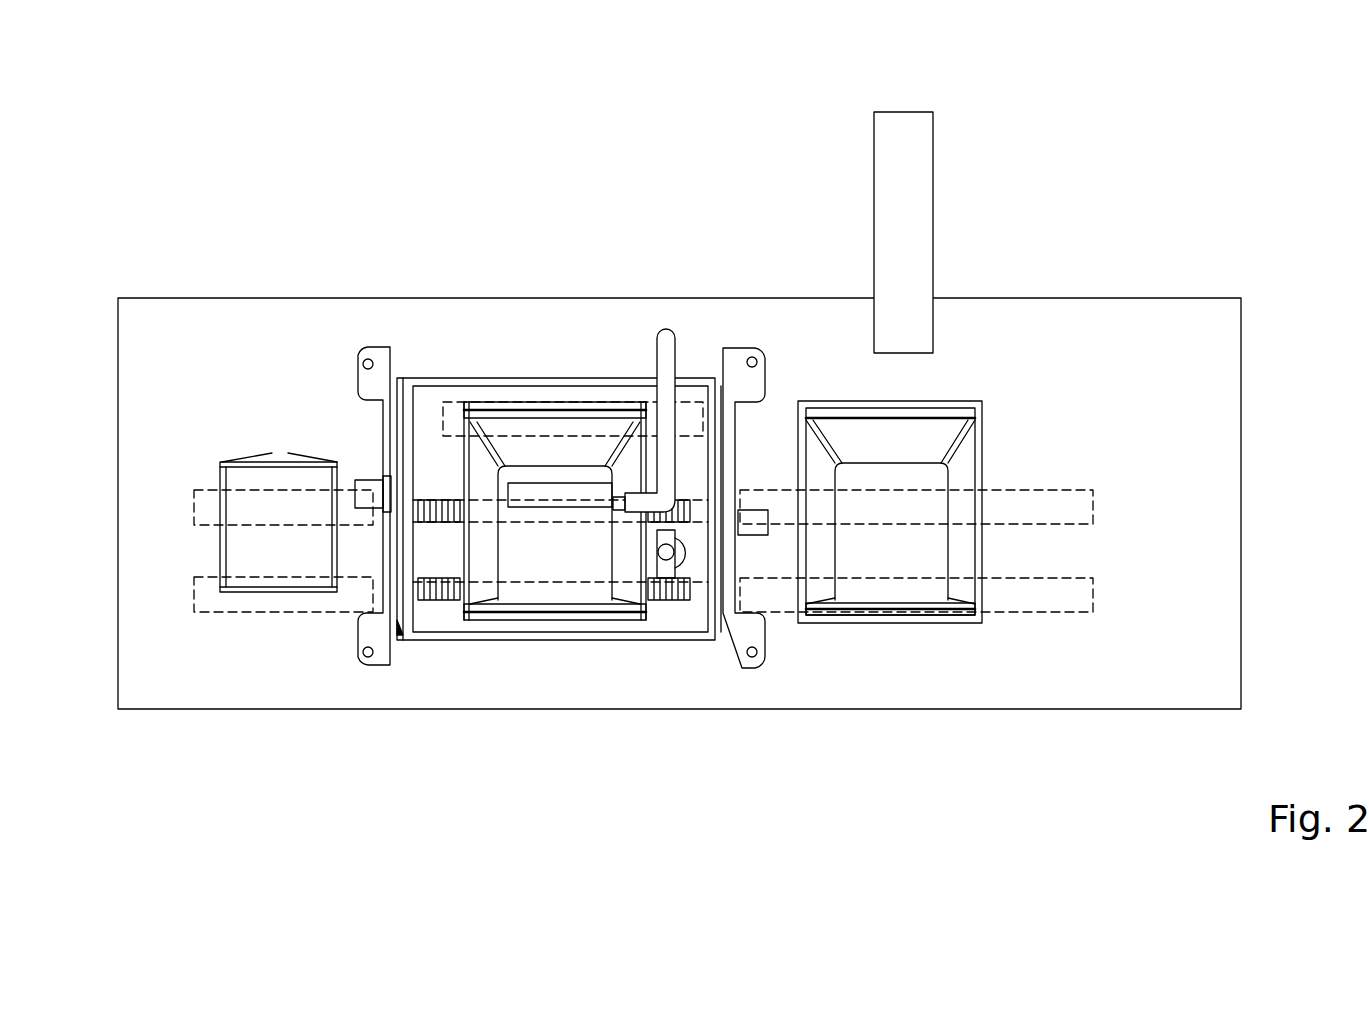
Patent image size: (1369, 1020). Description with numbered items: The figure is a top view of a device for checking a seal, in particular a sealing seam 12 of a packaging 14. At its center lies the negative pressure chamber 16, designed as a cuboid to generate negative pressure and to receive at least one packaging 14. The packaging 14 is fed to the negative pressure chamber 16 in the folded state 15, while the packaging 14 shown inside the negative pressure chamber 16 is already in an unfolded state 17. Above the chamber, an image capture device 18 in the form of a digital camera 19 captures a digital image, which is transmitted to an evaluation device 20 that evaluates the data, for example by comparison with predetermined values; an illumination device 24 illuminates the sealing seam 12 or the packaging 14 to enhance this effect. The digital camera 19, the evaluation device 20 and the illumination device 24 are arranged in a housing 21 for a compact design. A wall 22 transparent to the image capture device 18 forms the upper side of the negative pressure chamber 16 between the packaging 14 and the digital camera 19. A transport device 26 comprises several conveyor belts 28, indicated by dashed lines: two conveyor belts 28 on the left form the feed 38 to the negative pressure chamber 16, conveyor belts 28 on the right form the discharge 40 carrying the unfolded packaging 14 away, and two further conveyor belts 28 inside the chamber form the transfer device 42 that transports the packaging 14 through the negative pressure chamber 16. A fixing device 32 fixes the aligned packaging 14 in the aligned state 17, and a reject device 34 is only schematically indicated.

The sealing seam 12 is at (935, 410).
The packaging 14 is at (870, 490).
The folded state 15 is at (297, 480).
The negative pressure chamber 16 is at (510, 650).
The unfolded state 17 is at (570, 560).
The image capture device 18 is at (579, 466).
The digital camera 19 is at (603, 465).
The evaluation device 20 is at (524, 464).
The housing 21 is at (598, 540).
The wall 22 is at (434, 428).
The illumination device 24 is at (553, 464).
The transport device 26 is at (197, 415).
The conveyor belts 28 is at (343, 465).
The fixing device 32 is at (688, 412).
The reject device 34 is at (905, 128).
The feed 38 is at (175, 468).
The discharge 40 is at (1108, 570).
The transfer device 42 is at (412, 632).